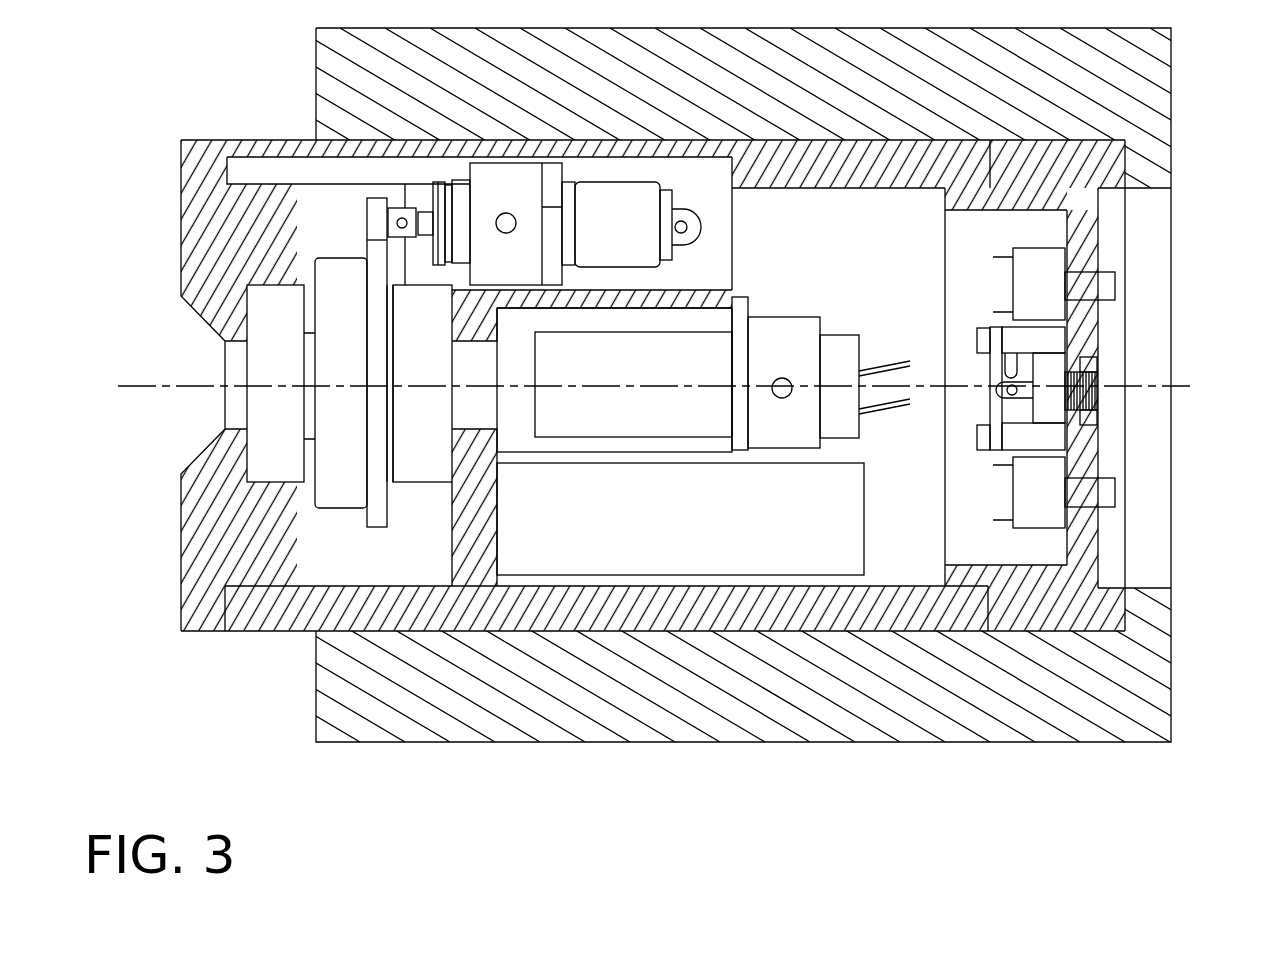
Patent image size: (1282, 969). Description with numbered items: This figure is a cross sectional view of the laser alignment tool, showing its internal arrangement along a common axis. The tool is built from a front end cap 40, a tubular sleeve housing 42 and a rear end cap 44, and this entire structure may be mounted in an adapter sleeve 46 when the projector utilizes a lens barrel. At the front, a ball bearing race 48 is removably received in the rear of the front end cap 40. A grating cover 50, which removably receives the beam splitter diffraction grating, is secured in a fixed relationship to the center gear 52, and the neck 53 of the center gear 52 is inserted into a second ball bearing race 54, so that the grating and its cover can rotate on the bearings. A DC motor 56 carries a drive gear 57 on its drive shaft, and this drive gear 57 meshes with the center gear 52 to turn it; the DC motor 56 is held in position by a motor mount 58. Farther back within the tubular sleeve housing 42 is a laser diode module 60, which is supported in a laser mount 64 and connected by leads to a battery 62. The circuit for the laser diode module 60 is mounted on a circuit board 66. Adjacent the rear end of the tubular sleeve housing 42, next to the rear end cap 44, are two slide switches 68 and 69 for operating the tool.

The front end cap 40 is at (180, 202).
The tubular sleeve housing 42 is at (288, 630).
The rear end cap 44 is at (1100, 552).
The adapter sleeve 46 is at (1173, 128).
The ball bearing race 48 is at (290, 447).
The grating cover 50 is at (355, 327).
The center gear 52 is at (373, 506).
The neck 53 is at (393, 370).
The ball bearing race 54 is at (438, 442).
The DC motor 56 is at (630, 237).
The drive gear 57 is at (372, 212).
The motor mount 58 is at (520, 201).
The laser diode module 60 is at (648, 372).
The battery 62 is at (698, 532).
The laser mount 64 is at (800, 362).
The circuit board 66 is at (986, 369).
The slide switch 68 is at (1050, 512).
The slide switch 69 is at (1050, 307).